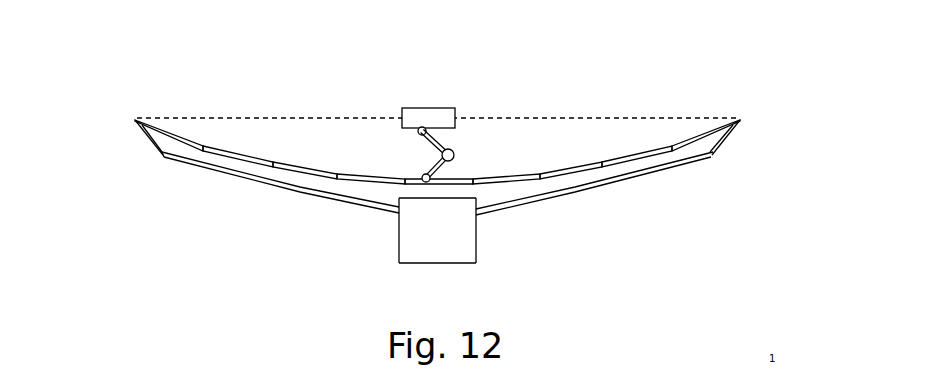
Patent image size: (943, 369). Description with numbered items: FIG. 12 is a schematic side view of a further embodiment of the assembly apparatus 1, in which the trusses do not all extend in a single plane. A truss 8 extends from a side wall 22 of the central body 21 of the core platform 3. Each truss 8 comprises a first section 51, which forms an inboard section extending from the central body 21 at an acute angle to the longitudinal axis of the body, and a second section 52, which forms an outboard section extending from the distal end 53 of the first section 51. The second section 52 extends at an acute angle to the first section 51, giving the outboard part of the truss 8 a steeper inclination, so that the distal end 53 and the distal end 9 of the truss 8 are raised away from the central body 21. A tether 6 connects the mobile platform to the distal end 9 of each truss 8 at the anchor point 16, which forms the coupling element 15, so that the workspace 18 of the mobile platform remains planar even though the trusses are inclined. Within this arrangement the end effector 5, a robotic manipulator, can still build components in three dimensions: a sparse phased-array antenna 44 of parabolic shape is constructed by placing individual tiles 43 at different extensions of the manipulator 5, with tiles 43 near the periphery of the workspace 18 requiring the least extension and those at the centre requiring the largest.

The assembly apparatus 1 is at (772, 74).
The core platform 3 is at (455, 263).
The end effector 5 is at (455, 156).
The tether 6 is at (313, 118).
The truss 8 is at (188, 201).
The distal end 9 is at (743, 119).
The coupling element 15 is at (126, 106).
The anchor point 16 is at (126, 112).
The workspace 18 is at (566, 108).
The central body 21 is at (462, 243).
The side wall 22 is at (398, 246).
The tile 43 is at (317, 171).
The sparse phased-array antenna 44 is at (597, 188).
The first section 51 is at (252, 176).
The second section 52 is at (147, 135).
The distal end 53 is at (163, 156).